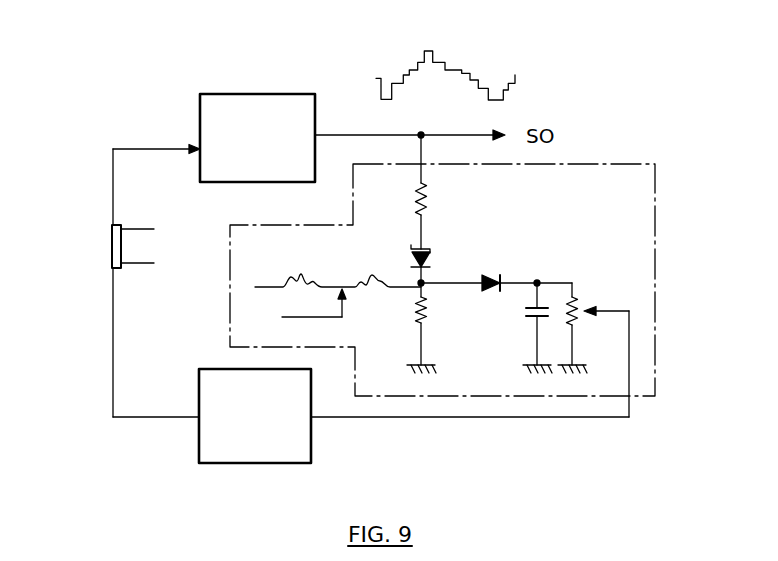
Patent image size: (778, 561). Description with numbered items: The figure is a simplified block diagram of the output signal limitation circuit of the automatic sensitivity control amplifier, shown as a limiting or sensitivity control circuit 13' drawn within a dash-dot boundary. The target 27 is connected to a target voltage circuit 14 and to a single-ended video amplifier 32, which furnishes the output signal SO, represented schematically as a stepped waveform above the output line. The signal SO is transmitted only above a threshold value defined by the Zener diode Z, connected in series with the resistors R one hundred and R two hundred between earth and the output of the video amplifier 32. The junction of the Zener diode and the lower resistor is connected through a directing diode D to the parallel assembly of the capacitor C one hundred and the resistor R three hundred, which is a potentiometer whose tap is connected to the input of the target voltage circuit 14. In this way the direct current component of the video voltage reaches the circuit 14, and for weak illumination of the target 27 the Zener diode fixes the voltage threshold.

The video amplifier 32 is at (263, 103).
The target 27 is at (111, 246).
The target voltage circuit 14 is at (291, 437).
The limiting or sensitivity control circuit 13' is at (474, 265).